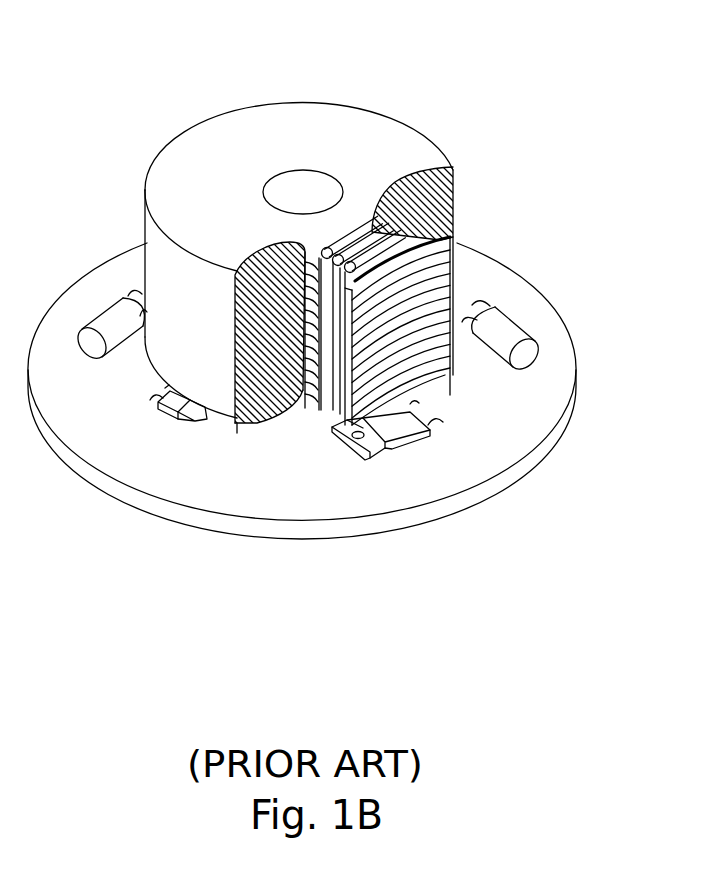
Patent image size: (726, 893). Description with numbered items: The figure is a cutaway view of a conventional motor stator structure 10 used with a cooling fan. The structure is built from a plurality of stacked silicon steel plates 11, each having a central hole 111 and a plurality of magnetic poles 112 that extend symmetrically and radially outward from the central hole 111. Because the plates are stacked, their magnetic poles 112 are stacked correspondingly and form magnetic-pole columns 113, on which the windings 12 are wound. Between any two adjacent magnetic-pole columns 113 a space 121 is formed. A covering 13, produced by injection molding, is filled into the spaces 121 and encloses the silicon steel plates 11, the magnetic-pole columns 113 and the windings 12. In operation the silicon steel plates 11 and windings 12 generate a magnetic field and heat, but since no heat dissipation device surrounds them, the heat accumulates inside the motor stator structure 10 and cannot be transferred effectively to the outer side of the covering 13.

The motor stator structure 10 is at (571, 144).
The silicon steel plates 11 is at (320, 240).
The central hole 111 is at (317, 192).
The magnetic poles 112 is at (449, 238).
The magnetic-pole columns 113 is at (308, 387).
The windings 12 is at (350, 274).
The space 121 is at (280, 412).
The covering 13 is at (273, 253).